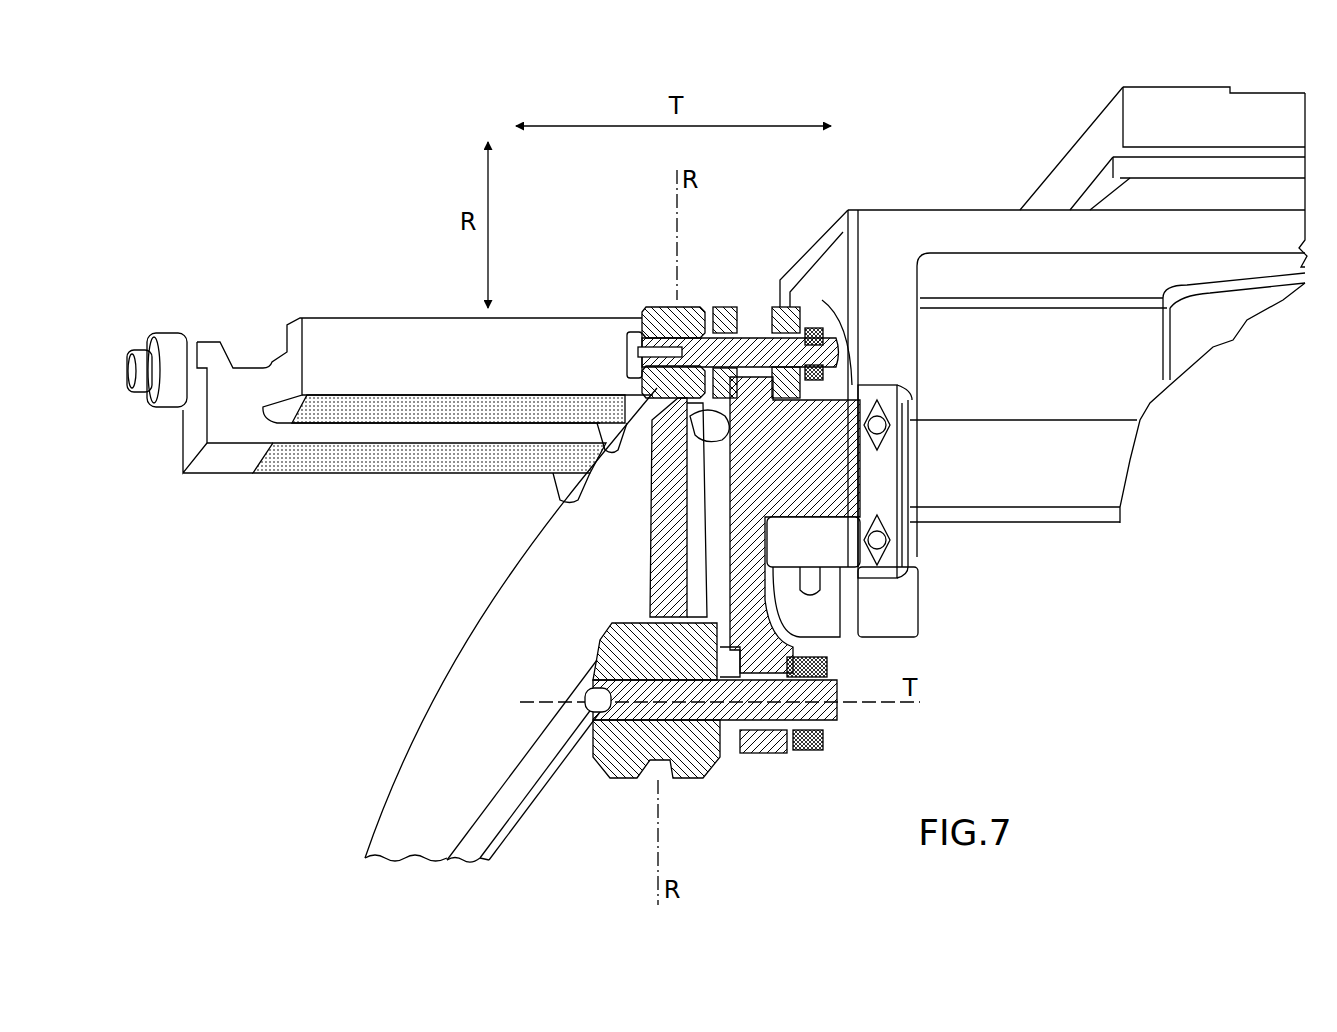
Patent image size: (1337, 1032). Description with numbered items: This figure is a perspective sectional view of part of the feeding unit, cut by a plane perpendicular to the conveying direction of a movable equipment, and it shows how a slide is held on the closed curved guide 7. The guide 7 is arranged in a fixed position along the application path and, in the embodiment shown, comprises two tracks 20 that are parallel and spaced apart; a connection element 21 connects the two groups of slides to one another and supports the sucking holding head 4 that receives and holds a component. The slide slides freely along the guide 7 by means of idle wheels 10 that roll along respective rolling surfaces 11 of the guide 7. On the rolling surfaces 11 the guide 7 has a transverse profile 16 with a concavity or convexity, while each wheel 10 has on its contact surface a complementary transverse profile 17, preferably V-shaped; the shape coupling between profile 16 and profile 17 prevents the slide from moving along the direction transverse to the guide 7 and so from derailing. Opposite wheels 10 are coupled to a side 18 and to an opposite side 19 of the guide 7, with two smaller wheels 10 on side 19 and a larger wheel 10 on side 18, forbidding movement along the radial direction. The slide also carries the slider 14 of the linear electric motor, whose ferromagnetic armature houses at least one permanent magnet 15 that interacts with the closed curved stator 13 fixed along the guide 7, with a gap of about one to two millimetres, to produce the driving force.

The sucking holding head 4 is at (1170, 97).
The guide 7 is at (410, 666).
The wheel 10 is at (698, 300).
The rolling surface 11 is at (537, 765).
The stator 13 is at (570, 768).
The slider 14 is at (372, 338).
The permanent magnet 15 is at (380, 407).
The transverse profile 16 is at (665, 615).
The transverse profile 17 is at (668, 305).
The side 18 is at (512, 842).
The side 19 is at (483, 600).
The track 20 is at (405, 757).
The connection element 21 is at (947, 222).